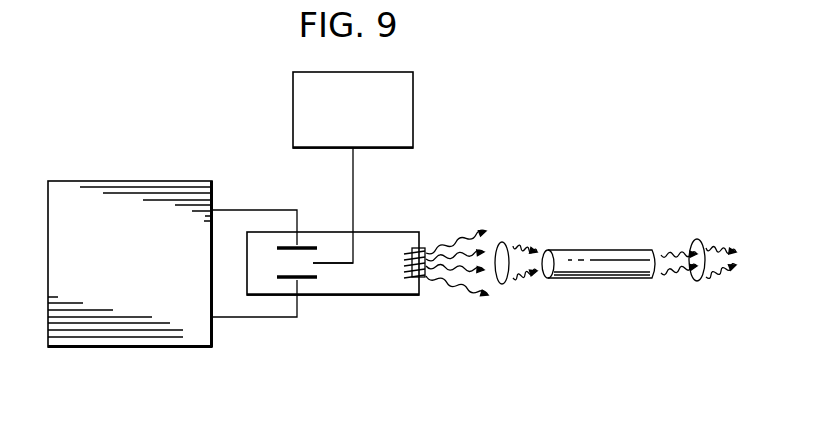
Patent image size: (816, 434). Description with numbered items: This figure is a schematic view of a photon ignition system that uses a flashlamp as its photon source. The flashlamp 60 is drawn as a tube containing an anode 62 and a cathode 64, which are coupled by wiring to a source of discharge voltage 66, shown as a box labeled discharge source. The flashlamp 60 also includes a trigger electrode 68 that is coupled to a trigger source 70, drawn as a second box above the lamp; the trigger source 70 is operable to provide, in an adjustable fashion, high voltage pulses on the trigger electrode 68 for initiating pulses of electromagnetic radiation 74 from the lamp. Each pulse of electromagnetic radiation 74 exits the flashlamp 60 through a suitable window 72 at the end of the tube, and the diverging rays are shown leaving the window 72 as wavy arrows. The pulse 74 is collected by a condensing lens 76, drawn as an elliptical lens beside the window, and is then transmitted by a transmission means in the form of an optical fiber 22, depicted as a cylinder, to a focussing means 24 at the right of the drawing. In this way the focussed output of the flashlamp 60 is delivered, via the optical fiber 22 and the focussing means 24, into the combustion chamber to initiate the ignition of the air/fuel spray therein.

The optical fiber 22 is at (571, 249).
The focussing means 24 is at (699, 281).
The flashlamp 60 is at (400, 231).
The anode 62 is at (305, 245).
The cathode 64 is at (305, 280).
The source of discharge voltage 66 is at (132, 347).
The trigger electrode 68 is at (354, 249).
The trigger source 70 is at (413, 103).
The window 72 is at (418, 278).
The pulse of electromagnetic radiation 74 is at (452, 252).
The condensing lens 76 is at (507, 276).